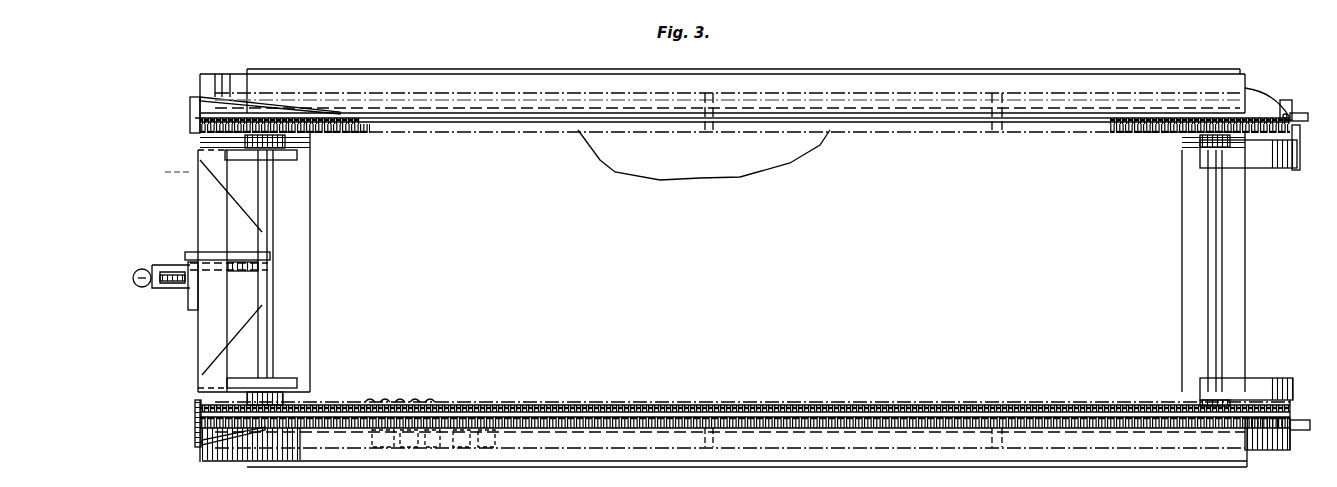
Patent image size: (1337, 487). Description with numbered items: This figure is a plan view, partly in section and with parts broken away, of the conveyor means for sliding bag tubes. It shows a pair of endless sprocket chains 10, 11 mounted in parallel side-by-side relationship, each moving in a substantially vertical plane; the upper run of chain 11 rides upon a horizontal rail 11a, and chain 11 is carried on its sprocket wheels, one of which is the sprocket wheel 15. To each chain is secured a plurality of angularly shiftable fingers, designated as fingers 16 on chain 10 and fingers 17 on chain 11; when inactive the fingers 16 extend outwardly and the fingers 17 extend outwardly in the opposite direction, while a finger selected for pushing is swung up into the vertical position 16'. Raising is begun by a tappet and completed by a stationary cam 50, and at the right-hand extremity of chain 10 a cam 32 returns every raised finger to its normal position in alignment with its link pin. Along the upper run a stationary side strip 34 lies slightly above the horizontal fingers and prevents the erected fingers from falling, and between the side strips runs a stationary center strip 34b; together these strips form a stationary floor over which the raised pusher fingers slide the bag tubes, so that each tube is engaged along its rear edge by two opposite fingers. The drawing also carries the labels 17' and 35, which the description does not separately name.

The endless sprocket chain 10 is at (197, 408).
The endless sprocket chain 11 is at (205, 137).
The horizontal rail 11a is at (430, 130).
The sprocket wheel 15 is at (300, 130).
The angularly shiftable finger 16 is at (719, 404).
The vertical position of finger 16' is at (683, 431).
The angularly shiftable finger 17 is at (718, 83).
The roller guide spacer 17' is at (859, 126).
The cam 32 is at (1302, 425).
The side strip 34 is at (356, 457).
The center strip 34b is at (706, 172).
The end frame 35 is at (268, 350).
The stationary cam 50 is at (205, 457).